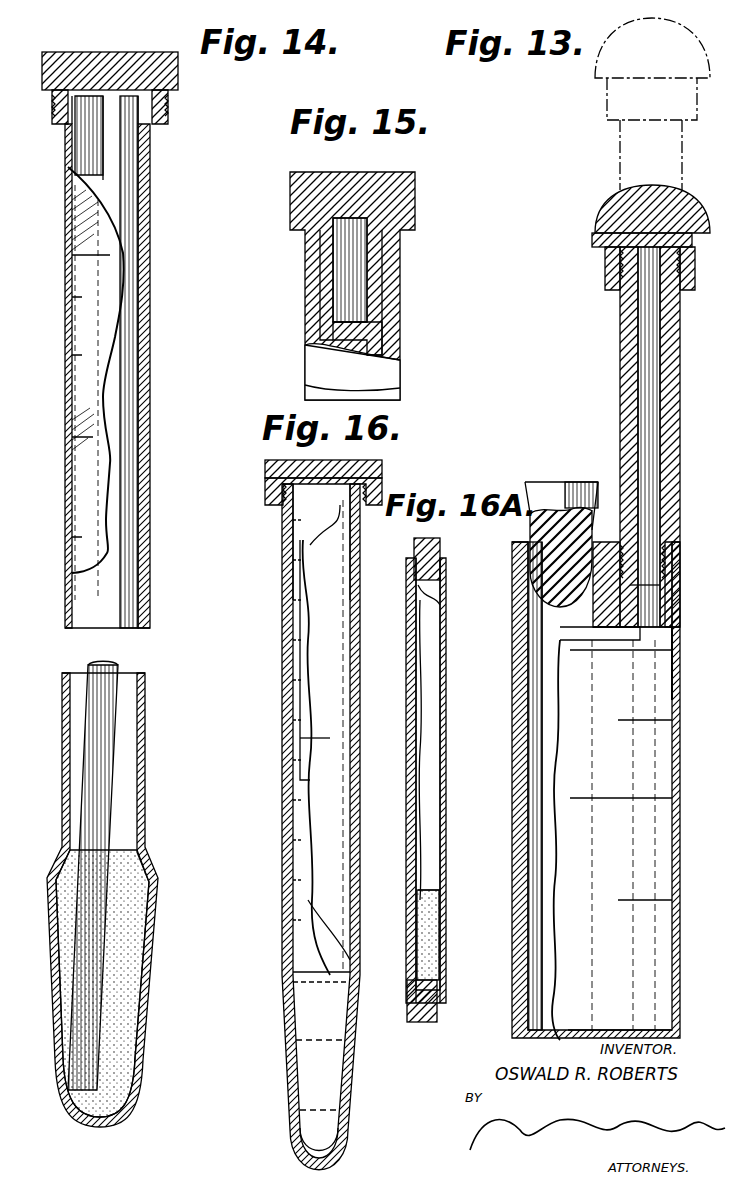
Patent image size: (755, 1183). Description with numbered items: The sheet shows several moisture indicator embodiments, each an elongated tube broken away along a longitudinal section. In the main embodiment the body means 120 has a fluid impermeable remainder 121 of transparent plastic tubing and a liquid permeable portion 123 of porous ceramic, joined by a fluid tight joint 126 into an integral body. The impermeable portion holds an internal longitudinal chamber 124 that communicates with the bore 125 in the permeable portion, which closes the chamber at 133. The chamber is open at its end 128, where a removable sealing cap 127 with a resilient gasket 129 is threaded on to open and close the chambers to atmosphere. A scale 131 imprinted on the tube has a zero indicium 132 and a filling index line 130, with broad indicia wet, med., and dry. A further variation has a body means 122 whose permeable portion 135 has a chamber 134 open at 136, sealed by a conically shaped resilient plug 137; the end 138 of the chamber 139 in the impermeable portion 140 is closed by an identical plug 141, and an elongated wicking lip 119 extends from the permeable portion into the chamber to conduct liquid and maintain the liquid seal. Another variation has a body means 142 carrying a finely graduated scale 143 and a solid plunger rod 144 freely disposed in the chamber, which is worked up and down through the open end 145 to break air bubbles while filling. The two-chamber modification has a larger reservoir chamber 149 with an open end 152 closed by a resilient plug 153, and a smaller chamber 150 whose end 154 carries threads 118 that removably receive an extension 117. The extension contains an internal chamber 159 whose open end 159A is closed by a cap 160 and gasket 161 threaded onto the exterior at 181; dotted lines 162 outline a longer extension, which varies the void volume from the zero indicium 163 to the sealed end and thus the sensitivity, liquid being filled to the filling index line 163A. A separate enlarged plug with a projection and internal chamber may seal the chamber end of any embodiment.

In FIG. 13, the extension 117 is at (670, 398).
In FIG. 13, the threads 118 is at (676, 565).
In FIG. 16A, the elongated lip 119 is at (418, 880).
In FIG. 16, the body means 120 is at (272, 718).
In FIG. 16, the fluid impermeable remainder 121 is at (300, 738).
In FIG. 16A, the body means 122 is at (448, 780).
In FIG. 16, the liquid permeable portion 123 is at (285, 1024).
In FIG. 16, the internal longitudinal chamber 124 is at (298, 948).
In FIG. 16, the internal longitudinal chamber or bore 125 is at (315, 1062).
In FIG. 16, the fluid tight joint 126 is at (285, 972).
In FIG. 16, the removable sealing element or cap 127 is at (265, 468).
In FIG. 16, the open end 128 is at (300, 506).
In FIG. 16, the resilient gasket 129 is at (268, 488).
In FIG. 16, the filling index line 130 is at (352, 508).
In FIG. 16, the scale 131 is at (308, 600).
In FIG. 16, the zero indicium 132 is at (300, 551).
In FIG. 16, the closed end 133 is at (295, 1148).
In FIG. 16A, the chamber 134 is at (425, 928).
In FIG. 16A, the permeable portion 135 is at (440, 945).
In FIG. 16A, the open end 136 is at (422, 975).
In FIG. 16A, the conically shaped resilient plug 137 is at (424, 1022).
In FIG. 16A, the end of chamber 138 is at (428, 606).
In FIG. 16A, the chamber 139 is at (415, 740).
In FIG. 16A, the impermeable portion 140 is at (432, 715).
In FIG. 16A, the plug 141 is at (440, 548).
In FIG. 14, the body means 142 is at (161, 487).
In FIG. 14, the scale 143 is at (76, 370).
In FIG. 14, the plunger rod 144 is at (128, 170).
In FIG. 14, the open end 145 is at (145, 102).
In FIG. 13, the chamber 149 is at (540, 838).
In FIG. 13, the chamber 150 is at (648, 627).
In FIG. 13, the open end 152 is at (542, 700).
In FIG. 13, the resilient removable plug 153 is at (565, 515).
In FIG. 13, the end of chamber 154 is at (655, 590).
In FIG. 13, the internal chamber 159 is at (652, 378).
In FIG. 13, the open end 159A is at (650, 315).
In FIG. 13, the cap 160 is at (612, 208).
In FIG. 13, the gasket 161 is at (608, 235).
In FIG. 13, the dotted lines 162 is at (682, 170).
In FIG. 13, the zero indicium 163 is at (675, 665).
In FIG. 13, the filling index line 163A is at (672, 650).
In FIG. 13, the threaded exterior 181 is at (684, 280).